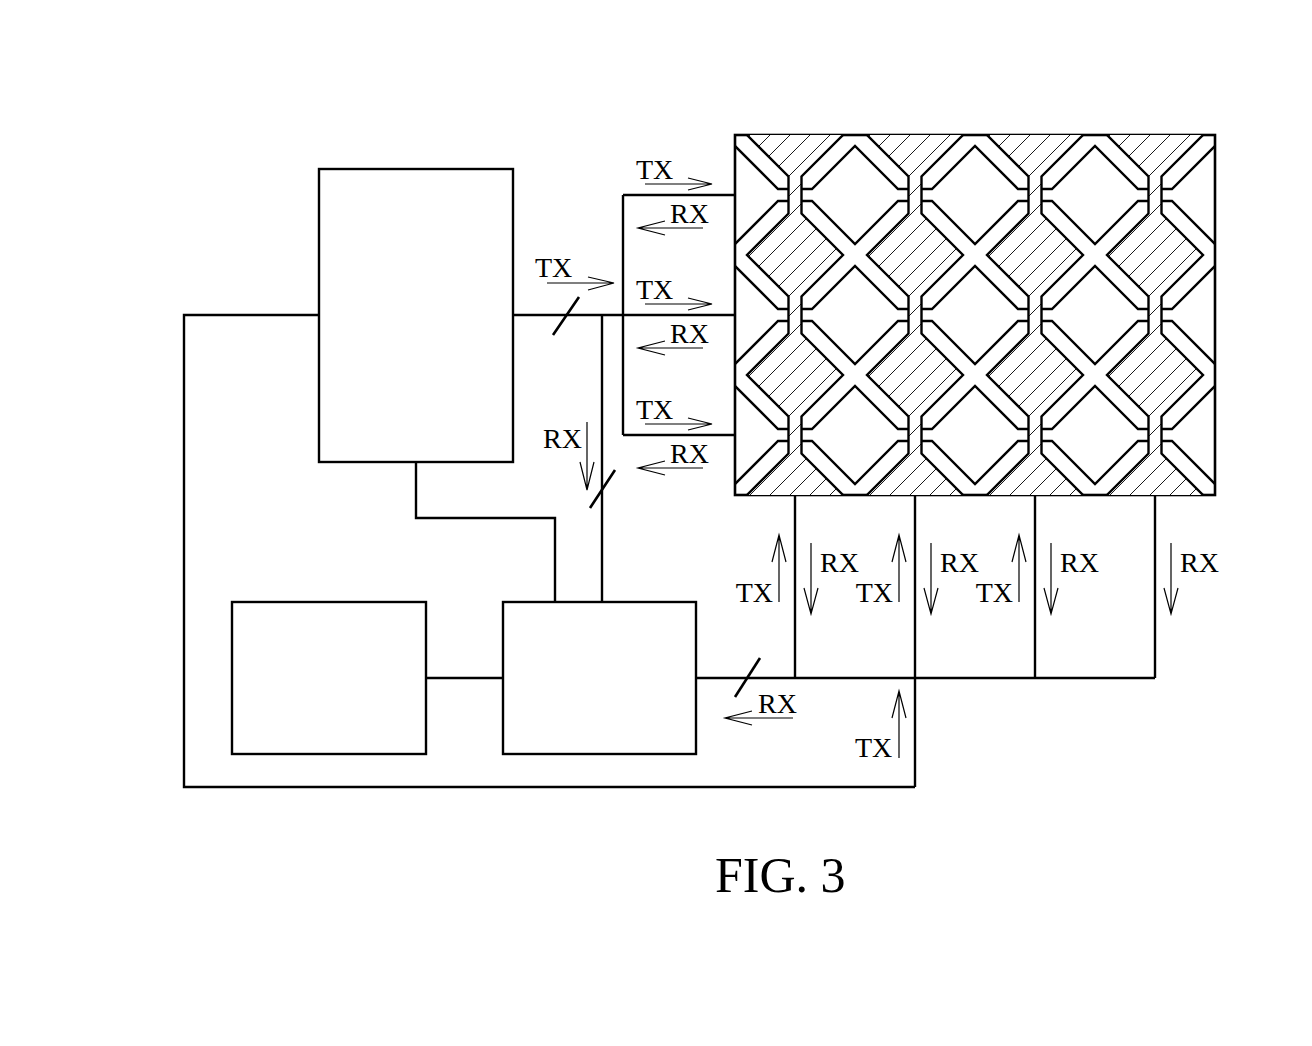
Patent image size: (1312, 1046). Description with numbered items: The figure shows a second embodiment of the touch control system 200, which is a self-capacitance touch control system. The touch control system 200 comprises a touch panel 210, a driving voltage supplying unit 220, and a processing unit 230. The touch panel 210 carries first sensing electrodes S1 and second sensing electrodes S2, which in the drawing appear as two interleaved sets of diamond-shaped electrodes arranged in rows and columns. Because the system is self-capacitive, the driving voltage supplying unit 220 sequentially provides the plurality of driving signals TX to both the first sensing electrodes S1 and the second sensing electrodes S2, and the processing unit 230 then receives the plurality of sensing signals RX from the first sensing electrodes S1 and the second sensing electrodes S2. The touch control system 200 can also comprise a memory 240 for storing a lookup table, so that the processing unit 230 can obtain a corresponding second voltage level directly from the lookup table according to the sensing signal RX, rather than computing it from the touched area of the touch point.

The touch control system 200 is at (246, 98).
The touch panel 210 is at (931, 112).
The driving voltage supplying unit 220 is at (432, 320).
The processing unit 230 is at (616, 700).
The memory 240 is at (344, 700).
The first sensing electrodes S1 is at (1203, 192).
The second sensing electrodes S2 is at (1153, 142).